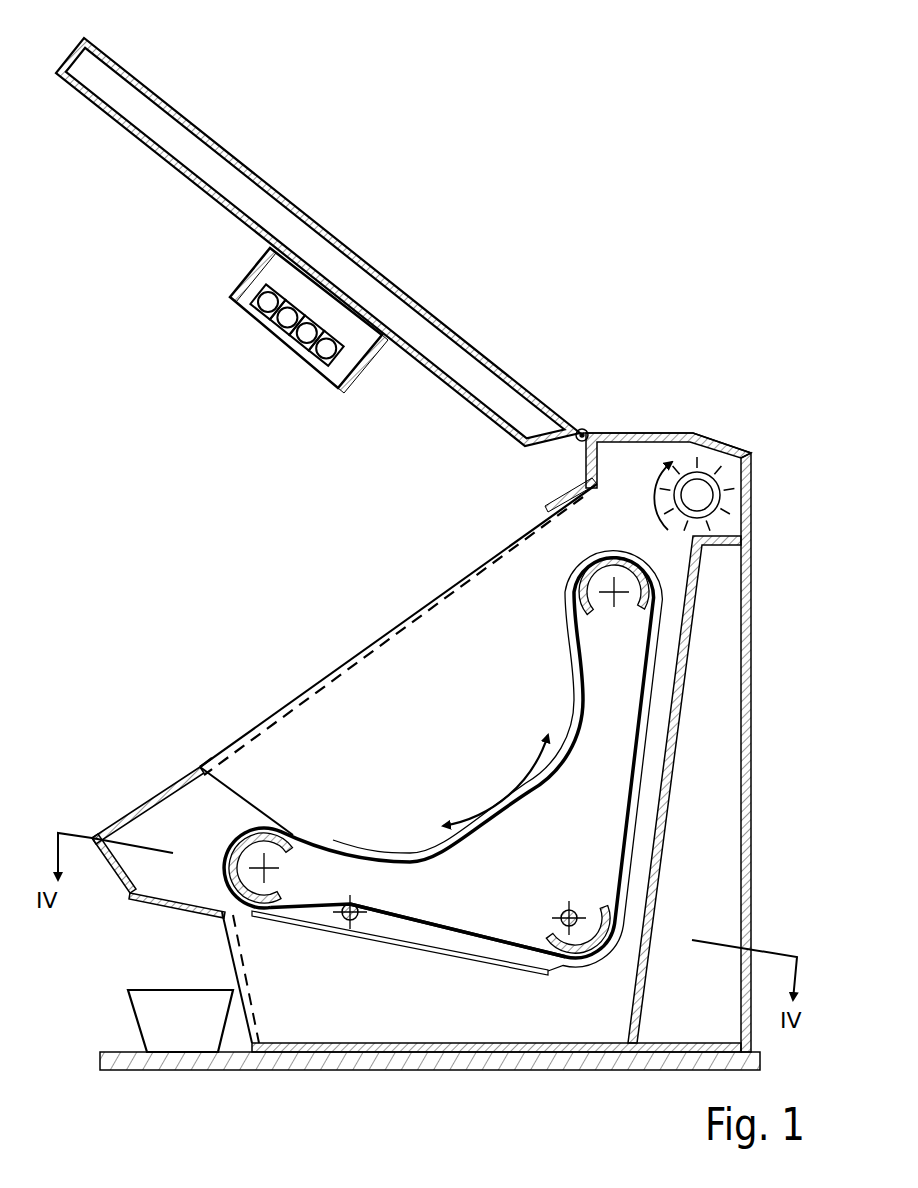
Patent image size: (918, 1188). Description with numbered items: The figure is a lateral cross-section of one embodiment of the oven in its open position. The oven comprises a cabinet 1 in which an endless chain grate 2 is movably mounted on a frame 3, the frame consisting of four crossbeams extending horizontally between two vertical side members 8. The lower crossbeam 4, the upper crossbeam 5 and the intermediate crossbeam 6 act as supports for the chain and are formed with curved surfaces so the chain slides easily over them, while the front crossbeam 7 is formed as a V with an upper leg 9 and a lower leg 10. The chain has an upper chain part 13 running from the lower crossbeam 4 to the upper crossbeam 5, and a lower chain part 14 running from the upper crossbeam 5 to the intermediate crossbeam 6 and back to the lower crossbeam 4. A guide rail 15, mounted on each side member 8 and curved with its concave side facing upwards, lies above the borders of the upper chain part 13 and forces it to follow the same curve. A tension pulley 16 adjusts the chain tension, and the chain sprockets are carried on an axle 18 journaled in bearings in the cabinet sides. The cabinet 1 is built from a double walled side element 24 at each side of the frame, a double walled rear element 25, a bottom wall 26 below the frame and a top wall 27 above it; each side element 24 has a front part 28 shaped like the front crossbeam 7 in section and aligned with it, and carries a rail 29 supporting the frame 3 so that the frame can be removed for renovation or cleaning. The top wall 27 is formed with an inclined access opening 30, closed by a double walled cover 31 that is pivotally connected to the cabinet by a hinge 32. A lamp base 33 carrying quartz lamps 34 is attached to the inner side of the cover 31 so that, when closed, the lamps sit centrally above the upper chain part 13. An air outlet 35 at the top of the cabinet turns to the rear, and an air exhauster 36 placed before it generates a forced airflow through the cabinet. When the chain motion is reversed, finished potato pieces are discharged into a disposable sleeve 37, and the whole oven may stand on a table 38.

The cabinet 1 is at (700, 410).
The endless chain grate 2 is at (580, 712).
The frame 3 is at (258, 808).
The lower crossbeam 4 is at (226, 855).
The upper crossbeam 5 is at (612, 550).
The intermediate crossbeam 6 is at (583, 960).
The front crossbeam 7 is at (90, 836).
The side member 8 is at (195, 912).
The upper leg 9 is at (140, 800).
The lower leg 10 is at (120, 882).
The upper chain part 13 is at (538, 808).
The lower chain part 14 is at (480, 930).
The guide rail 15 is at (556, 752).
The tension pulley 16 is at (350, 922).
The axle 18 is at (568, 905).
The double walled side element 24 is at (540, 1020).
The double walled rear element 25 is at (697, 897).
The bottom wall 26 is at (465, 1030).
The top wall 27 is at (652, 432).
The front part 28 is at (200, 765).
The rail 29 is at (468, 962).
The access opening 30 is at (405, 620).
The double walled cover 31 is at (352, 246).
The hinge 32 is at (581, 428).
The lamp base 33 is at (362, 382).
The quartz lamp 34 is at (322, 352).
The air outlet 35 is at (752, 510).
The air exhauster 36 is at (708, 482).
The disposable sleeve 37 is at (155, 1020).
The table 38 is at (297, 1072).